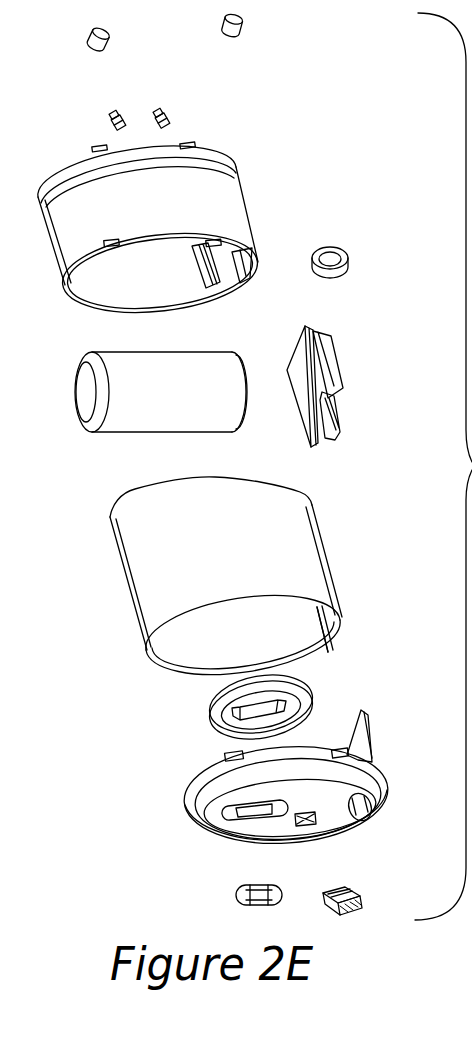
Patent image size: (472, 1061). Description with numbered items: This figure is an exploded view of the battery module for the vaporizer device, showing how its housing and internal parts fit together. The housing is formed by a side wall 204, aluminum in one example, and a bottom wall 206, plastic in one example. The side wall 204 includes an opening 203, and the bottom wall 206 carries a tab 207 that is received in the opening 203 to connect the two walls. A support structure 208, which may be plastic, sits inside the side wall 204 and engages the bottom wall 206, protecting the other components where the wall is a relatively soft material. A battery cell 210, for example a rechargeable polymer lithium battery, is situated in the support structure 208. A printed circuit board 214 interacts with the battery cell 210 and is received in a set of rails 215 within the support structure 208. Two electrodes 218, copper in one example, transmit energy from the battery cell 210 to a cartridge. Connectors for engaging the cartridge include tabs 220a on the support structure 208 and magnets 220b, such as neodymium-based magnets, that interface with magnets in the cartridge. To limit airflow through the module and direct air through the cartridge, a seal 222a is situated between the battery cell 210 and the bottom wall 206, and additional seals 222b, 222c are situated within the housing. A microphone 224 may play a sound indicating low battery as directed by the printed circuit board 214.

The opening 203 is at (338, 626).
The side wall 204 is at (140, 567).
The bottom wall 206 is at (334, 798).
The tab 207 is at (376, 733).
The support structure 208 is at (237, 212).
The battery cell 210 is at (127, 390).
The printed circuit board 214 is at (330, 370).
The rails 215 is at (213, 283).
The electrodes 218 is at (157, 110).
The tabs 220a is at (108, 147).
The magnets 220b is at (112, 35).
The seal 222a is at (313, 689).
The additional seal 222b is at (363, 893).
The additional seal 222c is at (233, 897).
The microphone 224 is at (352, 257).